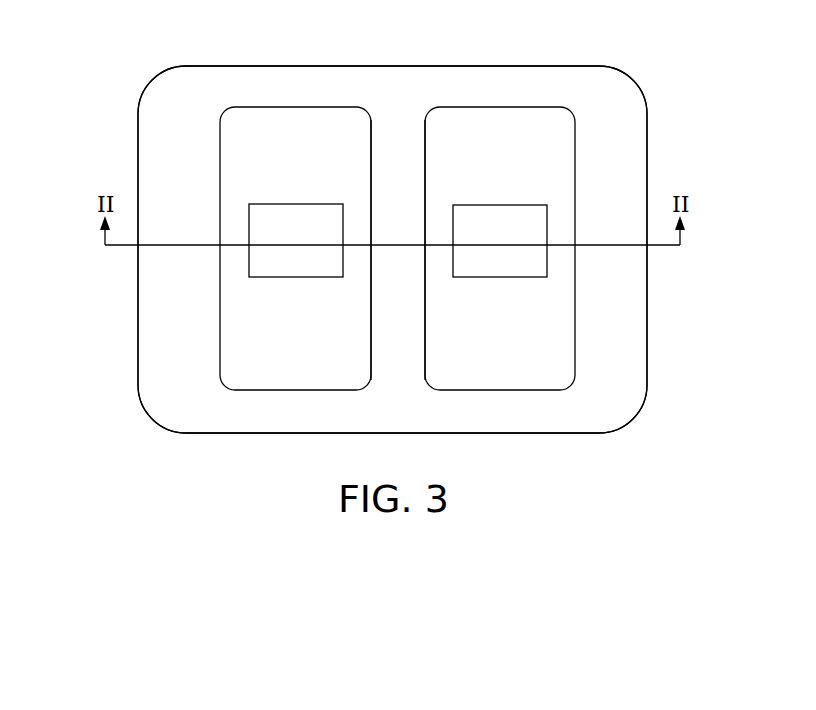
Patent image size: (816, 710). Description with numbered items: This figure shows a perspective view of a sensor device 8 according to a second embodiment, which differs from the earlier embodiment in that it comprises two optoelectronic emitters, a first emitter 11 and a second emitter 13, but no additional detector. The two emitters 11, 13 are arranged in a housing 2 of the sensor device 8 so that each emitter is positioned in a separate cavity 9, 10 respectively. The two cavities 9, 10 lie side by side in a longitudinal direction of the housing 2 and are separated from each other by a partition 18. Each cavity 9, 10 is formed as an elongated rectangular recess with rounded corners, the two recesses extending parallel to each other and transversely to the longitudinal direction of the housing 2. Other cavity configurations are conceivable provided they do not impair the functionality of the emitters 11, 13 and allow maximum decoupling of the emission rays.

The sensor device 8 is at (98, 92).
The housing 2 is at (619, 120).
The cavity 9 is at (286, 370).
The cavity 10 is at (519, 370).
The first emitter 11 is at (249, 264).
The second emitter 13 is at (540, 226).
The partition 18 is at (407, 147).